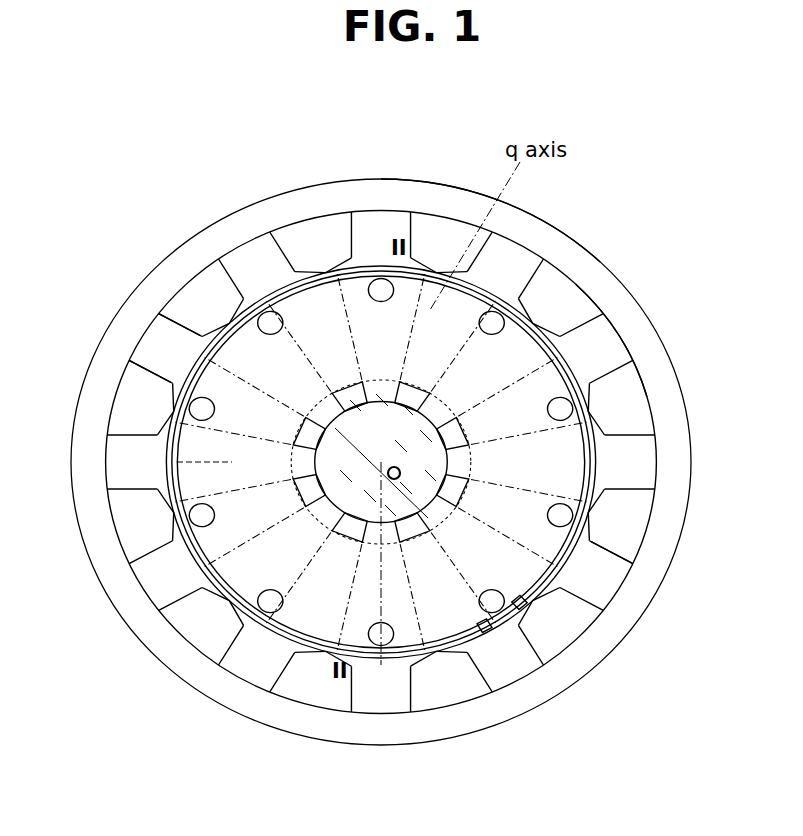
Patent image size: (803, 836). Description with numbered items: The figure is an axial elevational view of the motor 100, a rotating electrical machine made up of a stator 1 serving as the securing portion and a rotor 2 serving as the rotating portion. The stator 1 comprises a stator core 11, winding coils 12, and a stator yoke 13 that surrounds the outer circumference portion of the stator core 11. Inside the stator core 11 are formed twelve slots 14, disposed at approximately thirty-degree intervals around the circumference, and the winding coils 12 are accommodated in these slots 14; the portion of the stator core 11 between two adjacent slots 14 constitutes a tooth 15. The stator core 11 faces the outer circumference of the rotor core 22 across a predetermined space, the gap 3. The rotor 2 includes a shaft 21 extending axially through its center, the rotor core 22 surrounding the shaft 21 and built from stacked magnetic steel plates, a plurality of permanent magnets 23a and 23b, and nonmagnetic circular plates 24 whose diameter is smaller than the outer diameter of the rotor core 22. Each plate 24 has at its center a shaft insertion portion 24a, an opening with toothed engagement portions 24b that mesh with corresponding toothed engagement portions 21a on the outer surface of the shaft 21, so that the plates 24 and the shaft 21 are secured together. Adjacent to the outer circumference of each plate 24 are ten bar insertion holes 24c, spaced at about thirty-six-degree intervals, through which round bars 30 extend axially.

The motor 100 is at (624, 199).
The stator 1 is at (411, 462).
The stator core 11 is at (612, 323).
The winding coils 12 is at (620, 359).
The stator yoke 13 is at (645, 411).
The slots 14 is at (655, 414).
The tooth 15 is at (612, 460).
The rotor 2 is at (380, 425).
The permanent magnet 23a is at (281, 226).
The permanent magnet 23b is at (247, 243).
The plates 24 is at (176, 340).
The shaft insertion portion 24a is at (500, 567).
The toothed engagement portions 24b is at (472, 600).
The bar insertion holes 24c is at (168, 338).
The gap 3 is at (375, 520).
The bars 30 is at (175, 412).
The shaft 21 is at (238, 588).
The toothed engagement portions 21a is at (332, 558).
The rotor core 22 is at (200, 588).